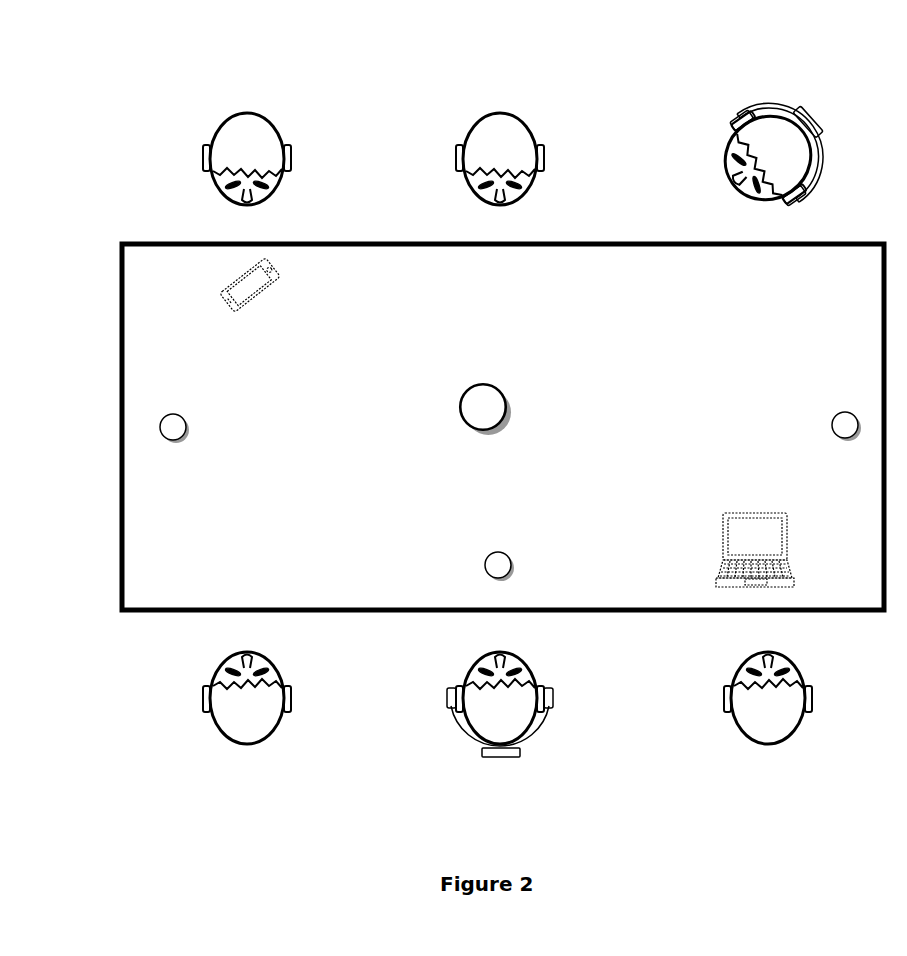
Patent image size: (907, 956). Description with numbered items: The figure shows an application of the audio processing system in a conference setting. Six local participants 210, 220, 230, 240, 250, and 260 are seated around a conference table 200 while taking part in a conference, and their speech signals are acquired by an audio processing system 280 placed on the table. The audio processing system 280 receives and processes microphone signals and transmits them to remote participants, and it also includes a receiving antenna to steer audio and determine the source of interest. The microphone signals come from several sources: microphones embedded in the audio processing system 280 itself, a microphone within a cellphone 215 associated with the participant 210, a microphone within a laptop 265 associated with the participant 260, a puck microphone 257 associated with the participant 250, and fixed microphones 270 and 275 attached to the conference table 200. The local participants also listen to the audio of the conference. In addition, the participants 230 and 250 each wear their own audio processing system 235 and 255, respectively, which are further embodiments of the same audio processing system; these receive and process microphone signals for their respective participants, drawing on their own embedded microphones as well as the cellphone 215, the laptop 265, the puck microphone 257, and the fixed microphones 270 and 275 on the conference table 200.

The conference table 200 is at (120, 312).
The local participant 210 is at (207, 168).
The cellphone 215 is at (250, 285).
The local participant 220 is at (458, 168).
The local participant 230 is at (727, 170).
The audio processing system 235 is at (753, 103).
The local participant 240 is at (208, 708).
The local participant 250 is at (470, 672).
The audio processing system 255 is at (460, 745).
The puck microphone 257 is at (497, 563).
The local participant 260 is at (727, 706).
The laptop 265 is at (737, 541).
The fixed microphone 270 is at (165, 430).
The fixed microphone 275 is at (845, 424).
The audio processing system 280 is at (488, 410).